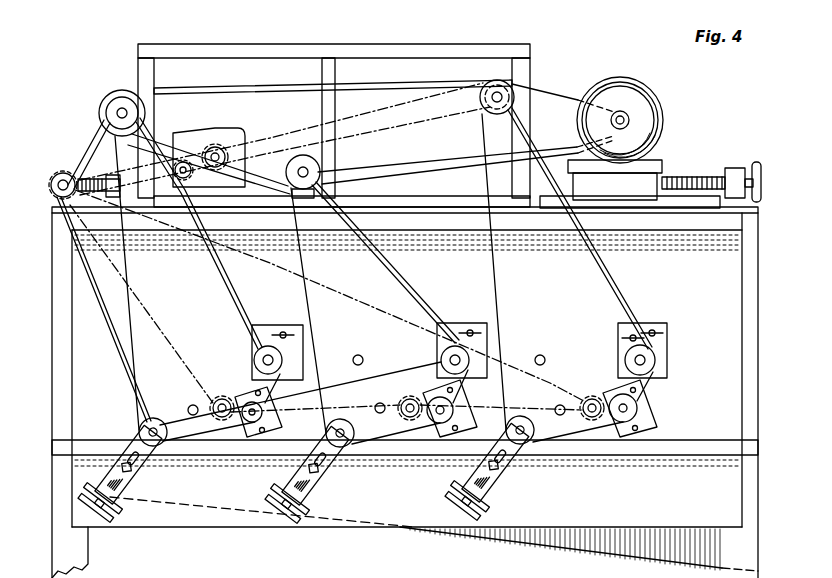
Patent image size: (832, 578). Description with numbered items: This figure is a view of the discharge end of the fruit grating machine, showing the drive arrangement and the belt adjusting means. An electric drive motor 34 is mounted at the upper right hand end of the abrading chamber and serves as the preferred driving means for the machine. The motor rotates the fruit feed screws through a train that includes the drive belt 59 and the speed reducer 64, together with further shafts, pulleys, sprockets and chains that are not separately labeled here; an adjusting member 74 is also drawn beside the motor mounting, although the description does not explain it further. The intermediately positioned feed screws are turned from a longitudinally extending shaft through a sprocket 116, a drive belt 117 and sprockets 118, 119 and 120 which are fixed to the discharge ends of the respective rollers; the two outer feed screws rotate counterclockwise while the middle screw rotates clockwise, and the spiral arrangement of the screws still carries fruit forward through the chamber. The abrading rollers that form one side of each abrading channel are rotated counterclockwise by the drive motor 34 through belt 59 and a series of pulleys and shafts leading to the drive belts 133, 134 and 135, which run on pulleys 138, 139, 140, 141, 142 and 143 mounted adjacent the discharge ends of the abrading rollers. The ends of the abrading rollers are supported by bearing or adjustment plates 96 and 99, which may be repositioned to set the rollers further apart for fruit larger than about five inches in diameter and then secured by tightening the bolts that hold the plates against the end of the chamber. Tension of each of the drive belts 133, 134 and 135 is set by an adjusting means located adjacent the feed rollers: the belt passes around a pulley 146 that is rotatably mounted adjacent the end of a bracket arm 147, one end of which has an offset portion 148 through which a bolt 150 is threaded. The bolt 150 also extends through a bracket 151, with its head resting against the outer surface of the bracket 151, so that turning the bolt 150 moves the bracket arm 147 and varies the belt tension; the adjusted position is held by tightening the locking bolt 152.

The drive motor 34 is at (631, 84).
The drive belt 59 is at (567, 89).
The speed reducer 64 is at (233, 131).
The adjusting screw 74 is at (700, 178).
The bearing plate 96 is at (669, 330).
The bearing plate 99 is at (648, 410).
The sprocket 116 is at (50, 186).
The drive belt 117 is at (118, 280).
The sprocket 118 is at (212, 404).
The sprocket 119 is at (410, 397).
The sprocket 120 is at (596, 399).
The drive belt 133 is at (610, 273).
The drive belt 134 is at (398, 273).
The drive belt 135 is at (238, 283).
The pulley 138 is at (650, 361).
The pulley 139 is at (632, 413).
The pulley 140 is at (442, 360).
The pulley 141 is at (447, 422).
The pulley 142 is at (254, 359).
The pulley 143 is at (244, 392).
The pulley 146 is at (523, 416).
The bracket arm 147 is at (503, 480).
The offset portion 148 is at (474, 481).
The bolt 150 is at (462, 500).
The bracket 151 is at (491, 506).
The locking bolt 152 is at (506, 464).